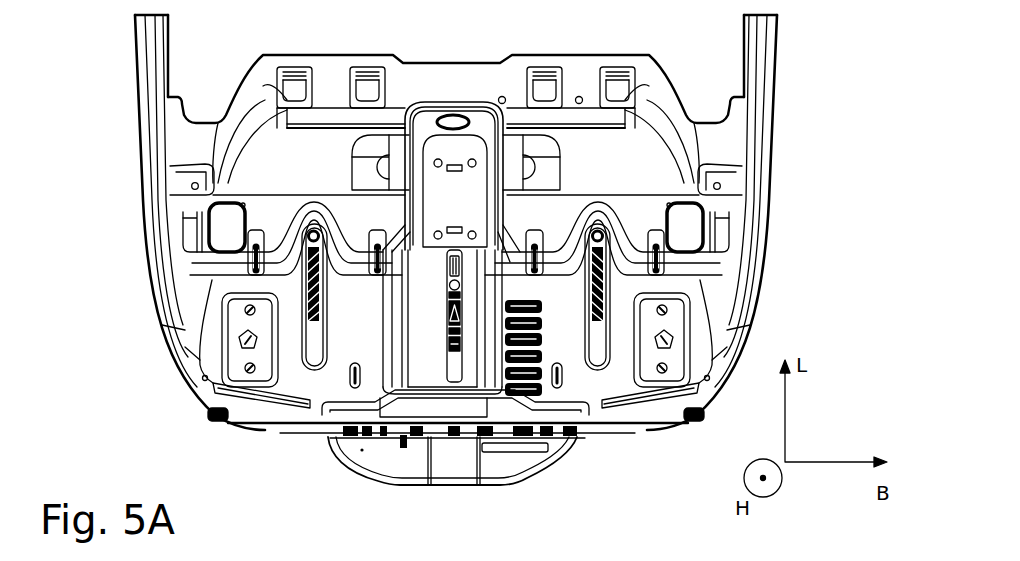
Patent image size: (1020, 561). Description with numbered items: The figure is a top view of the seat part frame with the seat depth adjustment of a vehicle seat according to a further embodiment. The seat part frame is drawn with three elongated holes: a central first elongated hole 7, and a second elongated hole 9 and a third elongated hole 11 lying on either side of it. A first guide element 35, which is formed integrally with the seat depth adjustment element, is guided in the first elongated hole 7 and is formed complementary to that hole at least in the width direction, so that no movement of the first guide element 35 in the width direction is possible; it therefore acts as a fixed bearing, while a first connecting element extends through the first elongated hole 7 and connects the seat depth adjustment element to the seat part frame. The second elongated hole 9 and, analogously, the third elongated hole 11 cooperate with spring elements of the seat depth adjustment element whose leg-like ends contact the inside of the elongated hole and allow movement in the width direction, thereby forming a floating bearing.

The first guide element 35 is at (442, 275).
The second elongated hole 9 is at (330, 348).
The first elongated hole 7 is at (446, 365).
The third elongated hole 11 is at (608, 348).